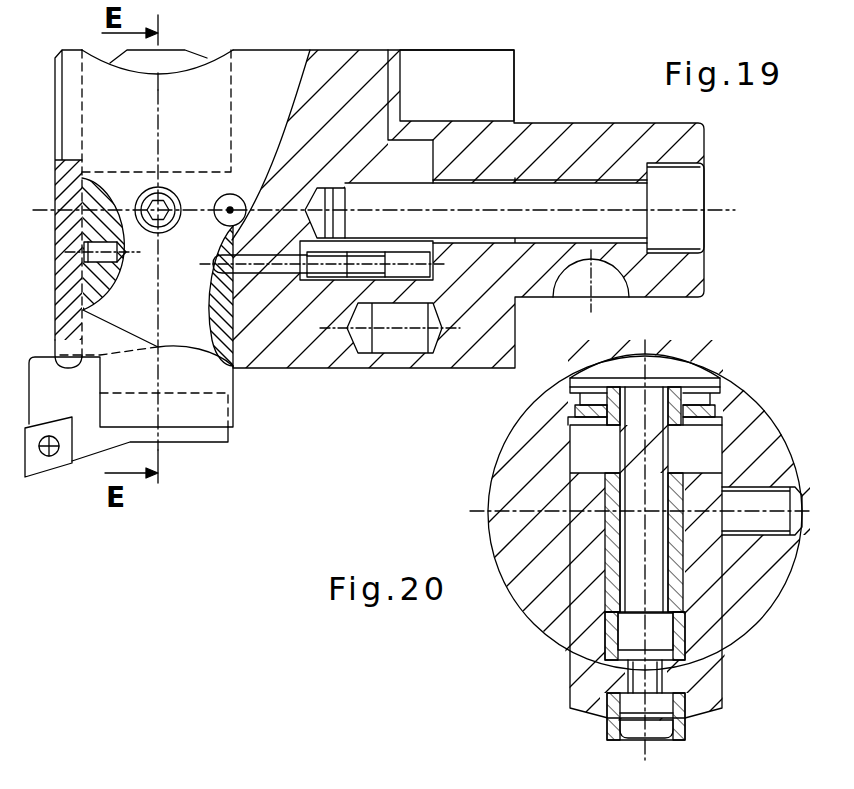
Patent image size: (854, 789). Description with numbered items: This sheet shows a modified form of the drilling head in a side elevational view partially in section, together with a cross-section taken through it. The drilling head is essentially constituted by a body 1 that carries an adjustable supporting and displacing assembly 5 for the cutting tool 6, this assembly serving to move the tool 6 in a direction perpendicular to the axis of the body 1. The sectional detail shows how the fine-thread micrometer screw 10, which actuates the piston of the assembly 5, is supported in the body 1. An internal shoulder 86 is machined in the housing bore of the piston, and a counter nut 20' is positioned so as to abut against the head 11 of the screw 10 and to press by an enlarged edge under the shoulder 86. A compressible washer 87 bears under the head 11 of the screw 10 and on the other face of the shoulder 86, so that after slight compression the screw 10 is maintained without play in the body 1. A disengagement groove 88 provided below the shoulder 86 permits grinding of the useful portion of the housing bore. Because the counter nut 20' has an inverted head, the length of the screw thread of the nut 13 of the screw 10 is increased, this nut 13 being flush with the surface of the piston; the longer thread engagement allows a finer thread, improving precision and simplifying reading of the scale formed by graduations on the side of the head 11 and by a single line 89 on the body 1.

In FIG. 19, the body 1 is at (343, 52).
In FIG. 19, the adjustable supporting and displacing assembly 5 is at (88, 47).
In FIG. 19, the cutting tool 6 is at (50, 458).
In FIG. 19, the single line 89 is at (161, 75).
In FIG. 20, the micrometer screw 10 is at (630, 452).
In FIG. 20, the head 11 is at (683, 370).
In FIG. 20, the nut 13 is at (617, 534).
In FIG. 20, the counter nut 20' is at (745, 400).
In FIG. 20, the internal shoulder 86 is at (578, 398).
In FIG. 20, the compressible washer 87 is at (715, 392).
In FIG. 20, the disengagement groove 88 is at (575, 420).